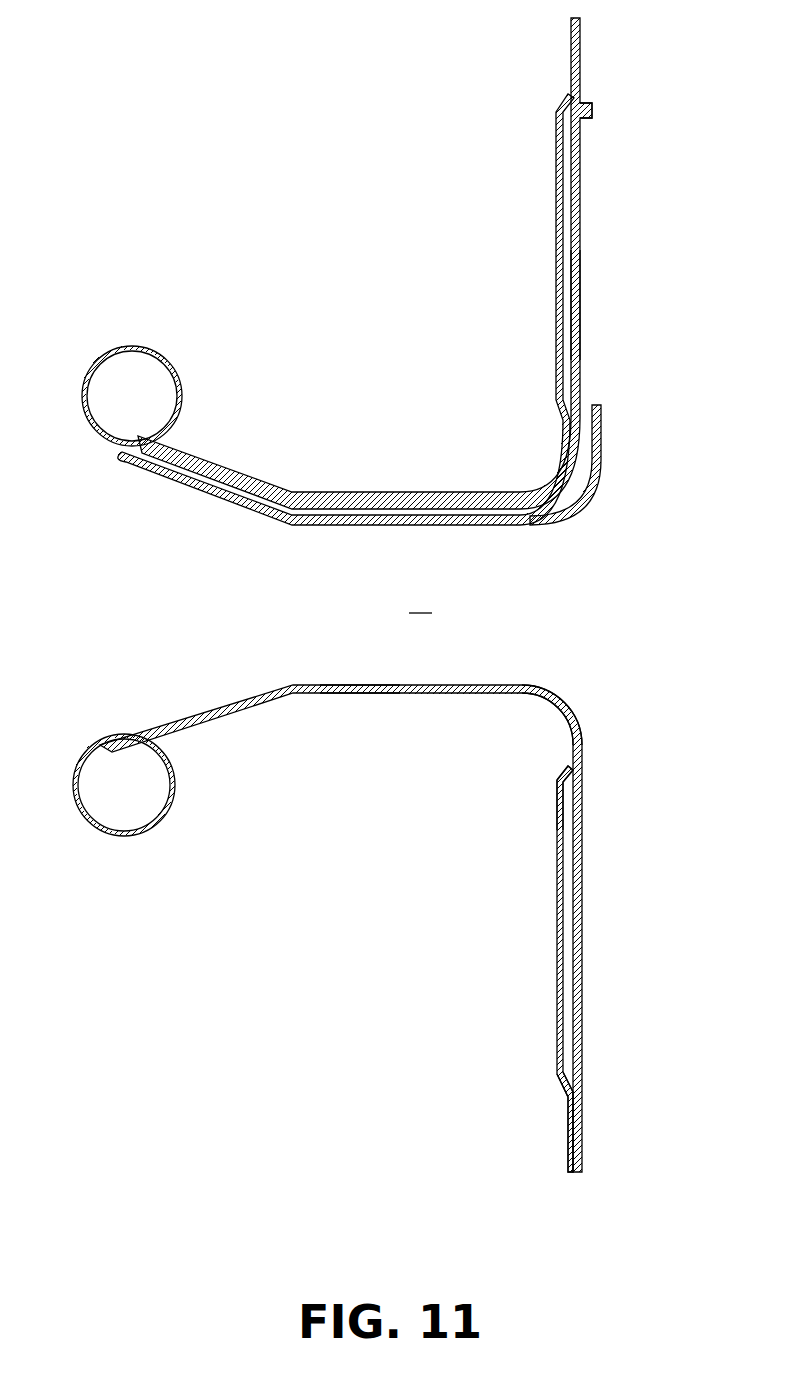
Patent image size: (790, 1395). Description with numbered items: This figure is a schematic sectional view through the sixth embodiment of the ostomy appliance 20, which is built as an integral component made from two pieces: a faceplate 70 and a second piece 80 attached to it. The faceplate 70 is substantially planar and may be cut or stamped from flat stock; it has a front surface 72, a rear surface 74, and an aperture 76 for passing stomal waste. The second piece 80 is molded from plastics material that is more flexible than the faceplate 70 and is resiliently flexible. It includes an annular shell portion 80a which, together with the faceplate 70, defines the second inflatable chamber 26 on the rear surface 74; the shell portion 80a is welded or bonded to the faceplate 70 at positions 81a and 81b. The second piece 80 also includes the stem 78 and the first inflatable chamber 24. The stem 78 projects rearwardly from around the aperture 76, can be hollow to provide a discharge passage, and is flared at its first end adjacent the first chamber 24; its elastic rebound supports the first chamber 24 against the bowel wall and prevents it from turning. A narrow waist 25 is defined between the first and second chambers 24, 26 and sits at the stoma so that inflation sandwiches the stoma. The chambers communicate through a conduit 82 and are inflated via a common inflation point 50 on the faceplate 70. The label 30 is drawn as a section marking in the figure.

The ostomy appliance 20 is at (155, 82).
The first inflatable chamber 24 is at (133, 800).
The waist 25 is at (452, 693).
The second inflatable chamber 26 is at (570, 152).
The section 30 is at (420, 601).
The common inflation point 50 is at (612, 110).
The faceplate 70 is at (596, 215).
The front surface 72 is at (582, 357).
The rear surface 74 is at (577, 308).
The aperture 76 is at (573, 717).
The stem 78 is at (352, 705).
The second piece 80 is at (189, 811).
The annular shell portion 80a is at (557, 920).
The attachment position 81a is at (570, 1125).
The attachment position 81b is at (568, 728).
The conduit 82 is at (598, 472).